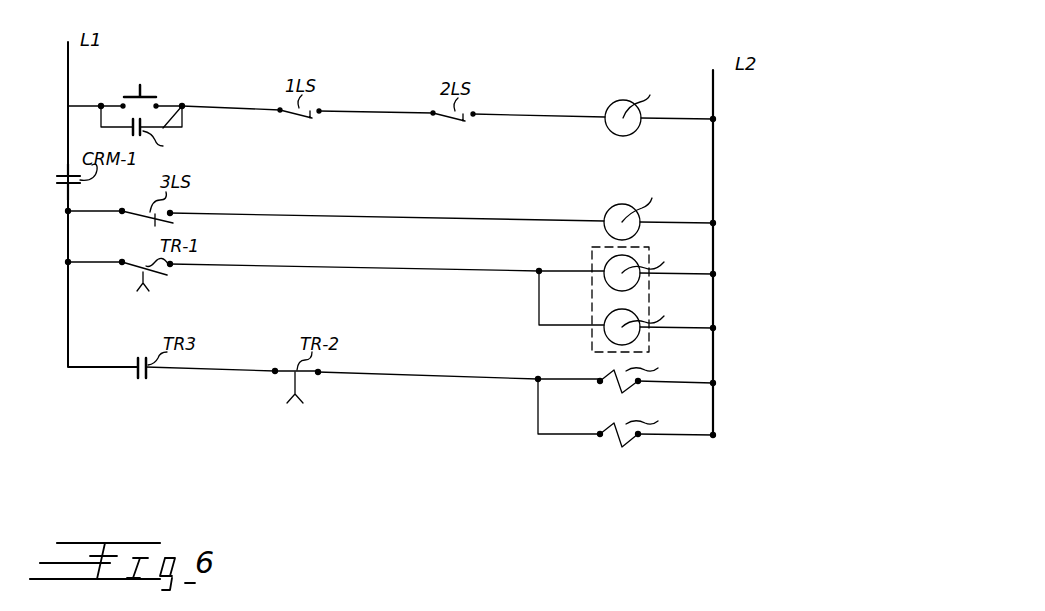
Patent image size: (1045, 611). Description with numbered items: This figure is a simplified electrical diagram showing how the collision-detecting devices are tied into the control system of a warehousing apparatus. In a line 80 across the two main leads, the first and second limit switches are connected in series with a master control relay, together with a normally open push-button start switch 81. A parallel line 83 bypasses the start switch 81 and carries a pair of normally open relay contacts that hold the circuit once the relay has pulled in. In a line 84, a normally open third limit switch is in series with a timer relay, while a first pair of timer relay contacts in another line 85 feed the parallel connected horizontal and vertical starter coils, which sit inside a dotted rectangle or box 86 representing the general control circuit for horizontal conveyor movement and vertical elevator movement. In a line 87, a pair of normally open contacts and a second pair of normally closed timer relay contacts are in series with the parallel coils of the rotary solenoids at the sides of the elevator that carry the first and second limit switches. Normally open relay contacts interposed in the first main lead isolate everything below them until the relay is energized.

The line 80 is at (568, 116).
The start switch 81 is at (142, 90).
The parallel line 83 is at (182, 106).
The line 84 is at (375, 214).
The line 85 is at (364, 265).
The dotted rectangle or box 86 is at (592, 256).
The line 87 is at (440, 377).